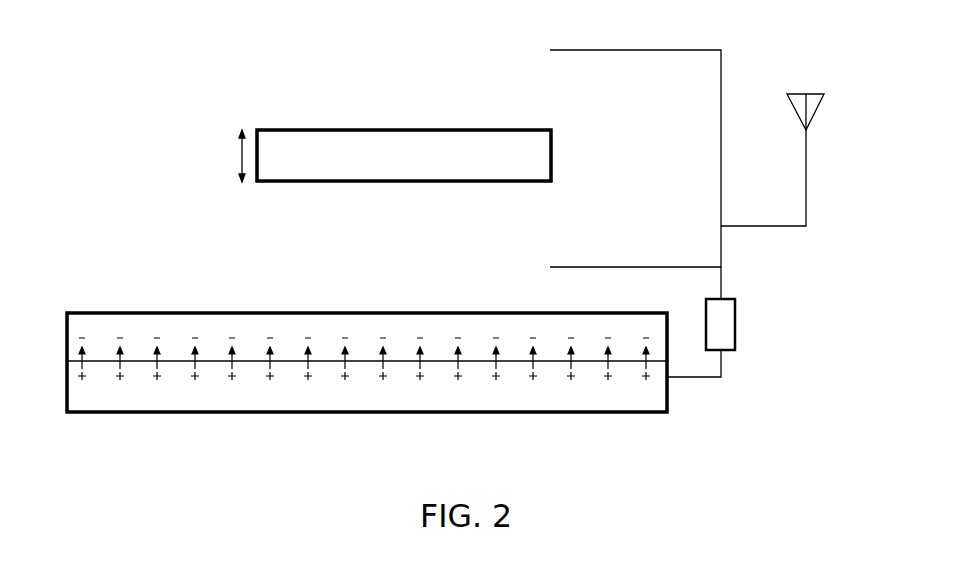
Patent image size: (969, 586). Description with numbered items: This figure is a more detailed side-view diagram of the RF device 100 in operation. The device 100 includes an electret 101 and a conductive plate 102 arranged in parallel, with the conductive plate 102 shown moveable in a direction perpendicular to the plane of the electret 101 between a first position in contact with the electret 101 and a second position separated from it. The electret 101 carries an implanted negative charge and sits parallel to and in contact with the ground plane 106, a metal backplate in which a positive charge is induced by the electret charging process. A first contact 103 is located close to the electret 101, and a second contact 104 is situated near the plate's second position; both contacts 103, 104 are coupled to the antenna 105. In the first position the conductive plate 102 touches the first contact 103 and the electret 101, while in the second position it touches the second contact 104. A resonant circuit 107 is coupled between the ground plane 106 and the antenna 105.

The RF device 100 is at (162, 90).
The electret 101 is at (367, 370).
The conductive plate 102 is at (389, 128).
The first contact 103 is at (629, 266).
The second contact 104 is at (629, 49).
The antenna 105 is at (808, 163).
The ground plane 106 is at (423, 393).
The resonant circuit 107 is at (737, 327).